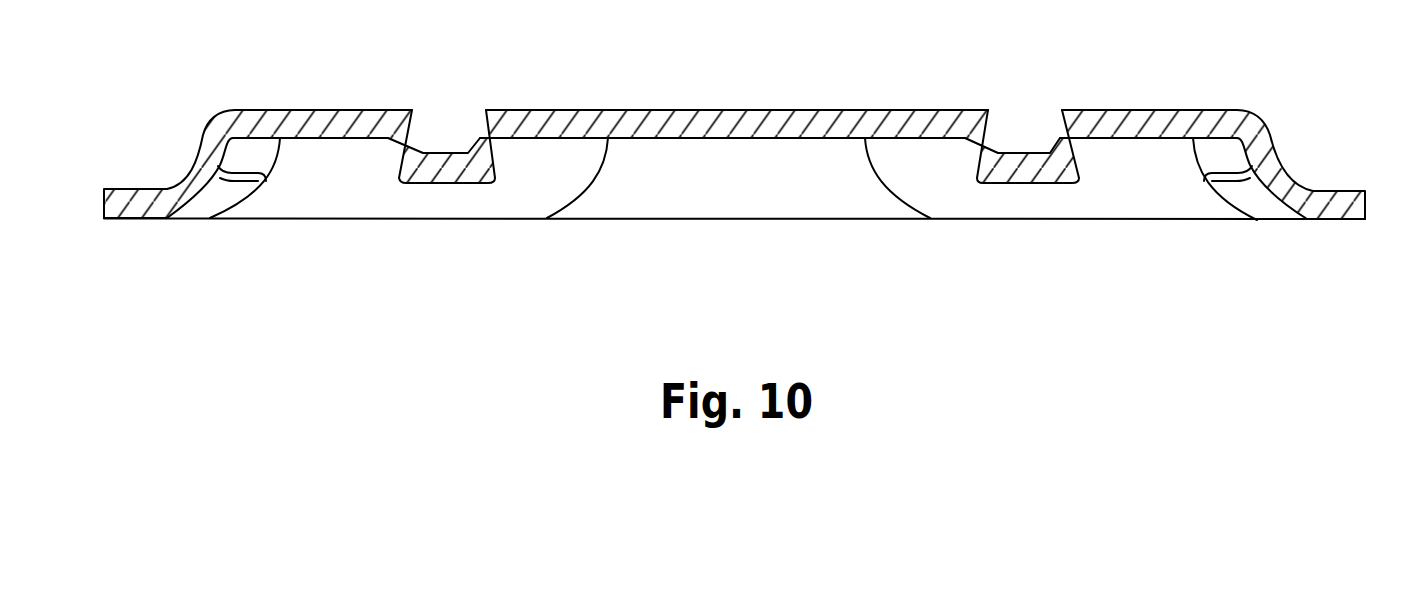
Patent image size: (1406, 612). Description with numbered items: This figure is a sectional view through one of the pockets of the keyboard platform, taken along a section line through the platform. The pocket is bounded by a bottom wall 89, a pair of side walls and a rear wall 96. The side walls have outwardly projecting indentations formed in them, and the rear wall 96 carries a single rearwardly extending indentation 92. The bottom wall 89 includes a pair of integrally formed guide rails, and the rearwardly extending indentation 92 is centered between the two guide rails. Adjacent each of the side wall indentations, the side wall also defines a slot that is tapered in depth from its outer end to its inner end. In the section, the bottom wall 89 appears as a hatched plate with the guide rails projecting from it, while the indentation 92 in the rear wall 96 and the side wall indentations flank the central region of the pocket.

The bottom wall 89 is at (713, 110).
The indentation 92 is at (717, 175).
The rear wall 96 is at (333, 185).